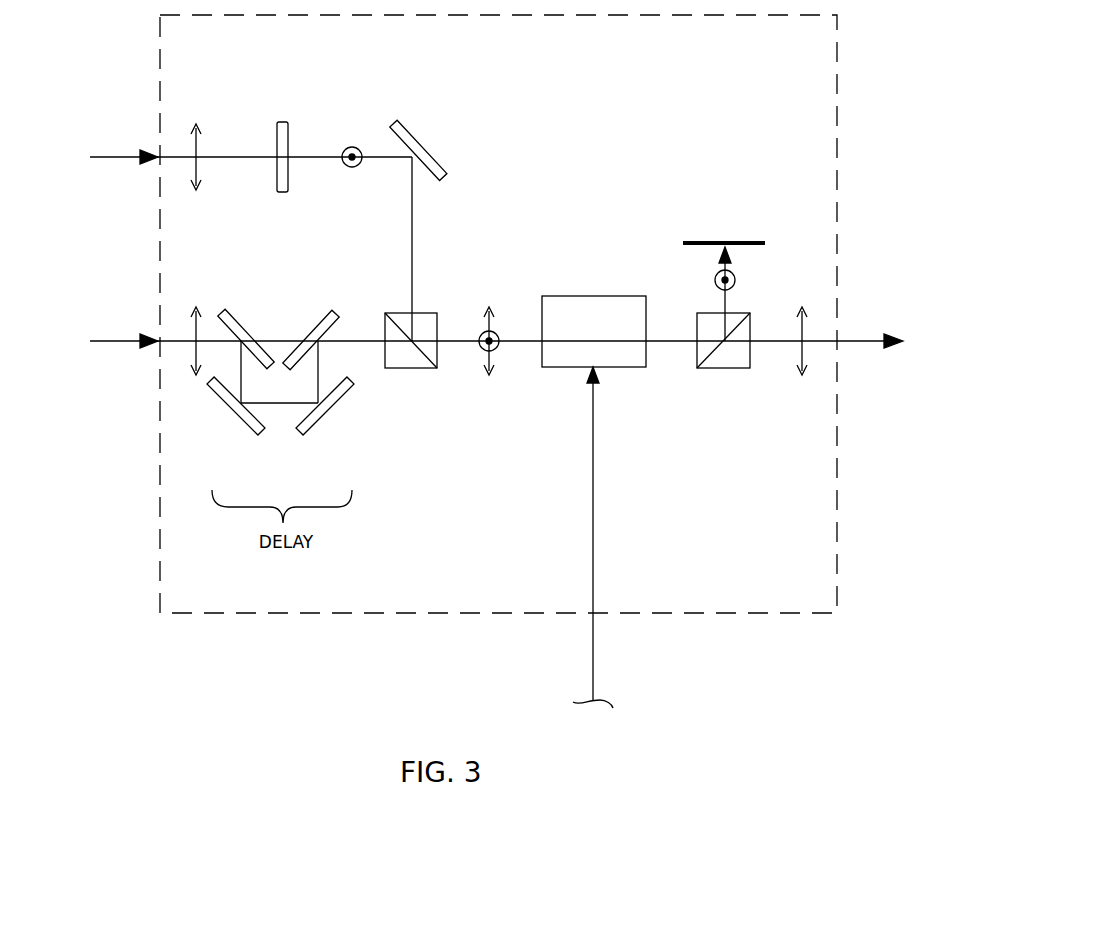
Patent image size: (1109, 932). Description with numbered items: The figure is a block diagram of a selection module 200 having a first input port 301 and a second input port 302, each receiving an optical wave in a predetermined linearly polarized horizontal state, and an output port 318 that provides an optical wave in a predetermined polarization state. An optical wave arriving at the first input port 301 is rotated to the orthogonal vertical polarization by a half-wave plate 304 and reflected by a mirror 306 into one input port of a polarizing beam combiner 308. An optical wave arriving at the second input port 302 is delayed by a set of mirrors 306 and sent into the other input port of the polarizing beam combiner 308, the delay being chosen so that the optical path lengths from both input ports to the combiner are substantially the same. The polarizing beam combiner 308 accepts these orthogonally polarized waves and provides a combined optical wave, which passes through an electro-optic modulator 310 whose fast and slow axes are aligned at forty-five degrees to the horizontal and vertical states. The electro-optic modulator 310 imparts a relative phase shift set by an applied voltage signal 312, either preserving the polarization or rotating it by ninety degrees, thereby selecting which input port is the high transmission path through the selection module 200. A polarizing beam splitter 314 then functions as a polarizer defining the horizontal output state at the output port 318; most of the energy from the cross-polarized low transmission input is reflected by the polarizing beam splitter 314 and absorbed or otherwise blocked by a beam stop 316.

The selection module 200 is at (750, 61).
The first input port 301 is at (122, 178).
The second input port 302 is at (122, 363).
The half-wave plate 304 is at (283, 122).
The mirror 306 is at (413, 135).
The polarizing beam combiner 308 is at (412, 368).
The electro-optic modulator 310 is at (628, 367).
The voltage signal 312 is at (593, 647).
The polarizing beam splitter 314 is at (728, 368).
The beam stop 316 is at (747, 240).
The output port 318 is at (888, 365).